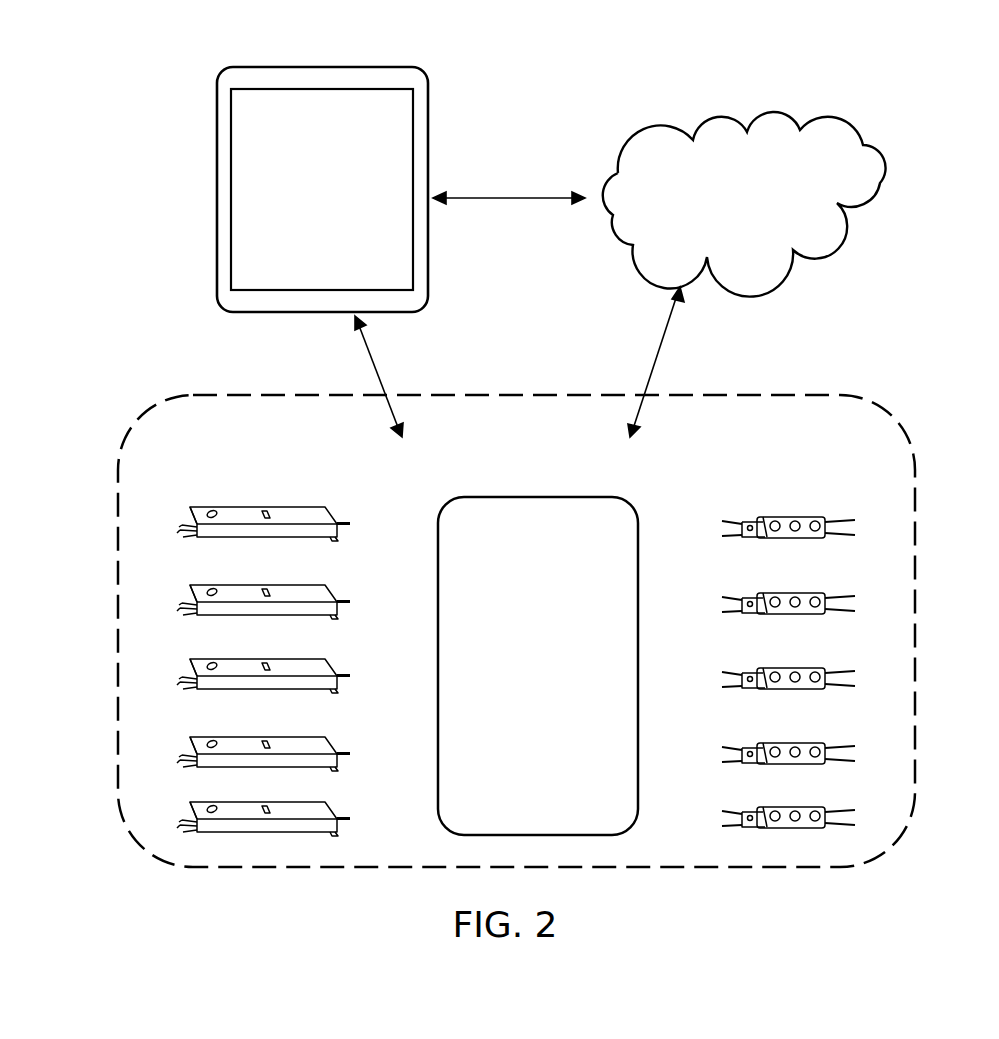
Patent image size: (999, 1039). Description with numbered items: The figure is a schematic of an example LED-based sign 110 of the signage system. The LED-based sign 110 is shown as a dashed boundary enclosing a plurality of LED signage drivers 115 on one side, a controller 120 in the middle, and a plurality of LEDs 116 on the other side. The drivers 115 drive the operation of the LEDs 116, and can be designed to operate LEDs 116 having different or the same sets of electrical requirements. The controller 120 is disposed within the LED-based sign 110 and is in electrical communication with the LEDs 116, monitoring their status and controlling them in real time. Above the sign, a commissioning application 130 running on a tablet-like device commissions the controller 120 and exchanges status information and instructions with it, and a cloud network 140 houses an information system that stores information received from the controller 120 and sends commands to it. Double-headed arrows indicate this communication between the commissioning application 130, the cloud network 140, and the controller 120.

The LED-based sign 110 is at (273, 394).
The LED signage driver 115 is at (188, 498).
The LEDs 116 is at (852, 508).
The controller 120 is at (537, 496).
The commissioning application 130 is at (337, 100).
The cloud network 140 is at (722, 120).